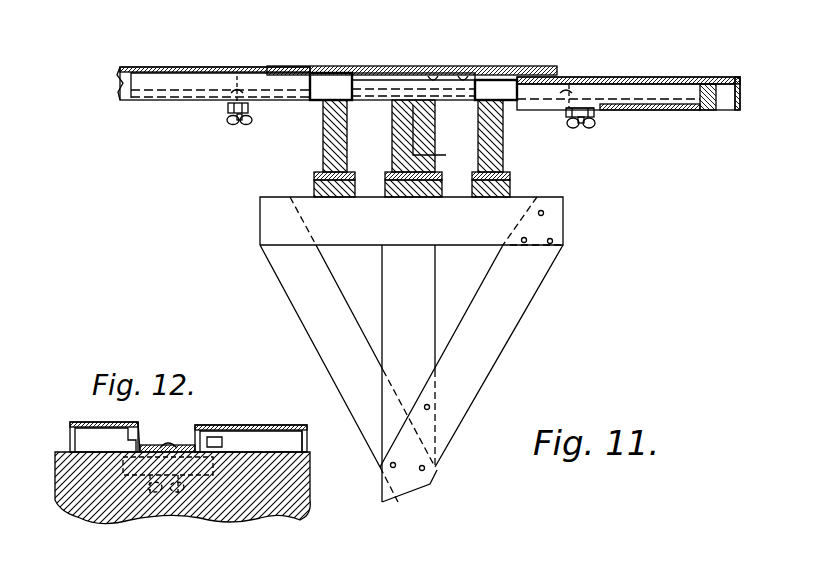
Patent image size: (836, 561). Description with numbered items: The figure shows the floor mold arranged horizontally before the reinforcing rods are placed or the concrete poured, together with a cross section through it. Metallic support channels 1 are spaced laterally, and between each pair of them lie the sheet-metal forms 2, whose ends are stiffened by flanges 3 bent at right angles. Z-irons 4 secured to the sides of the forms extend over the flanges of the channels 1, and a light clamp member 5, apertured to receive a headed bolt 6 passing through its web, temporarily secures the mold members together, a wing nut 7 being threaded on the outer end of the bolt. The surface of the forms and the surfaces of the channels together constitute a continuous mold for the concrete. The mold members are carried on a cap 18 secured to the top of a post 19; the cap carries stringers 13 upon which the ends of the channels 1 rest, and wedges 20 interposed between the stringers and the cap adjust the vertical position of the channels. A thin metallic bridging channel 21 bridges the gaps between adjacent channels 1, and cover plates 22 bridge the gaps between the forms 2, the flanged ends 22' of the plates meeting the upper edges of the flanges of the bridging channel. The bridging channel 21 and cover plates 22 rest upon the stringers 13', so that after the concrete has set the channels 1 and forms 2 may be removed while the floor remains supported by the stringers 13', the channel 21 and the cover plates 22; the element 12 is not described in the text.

In FIG. 11, the channel 1 is at (722, 91).
In FIG. 12, the channel 1 is at (228, 450).
In FIG. 11, the form 2 is at (667, 78).
In FIG. 12, the form 2 is at (307, 442).
In FIG. 11, the flange 3 is at (369, 74).
In FIG. 12, the flange 3 is at (70, 438).
In FIG. 11, the Z-iron 4 is at (691, 112).
In FIG. 12, the Z-iron 4 is at (220, 443).
In FIG. 11, the member 5 is at (593, 114).
In FIG. 12, the member 5 is at (137, 476).
In FIG. 11, the headed bolt 6 is at (568, 110).
In FIG. 11, the wing nut 7 is at (584, 122).
In FIG. 12, the wing nut 7 is at (183, 494).
In FIG. 11, the post cap / rod 12 is at (413, 86).
In FIG. 11, the stringer 13 is at (417, 136).
In FIG. 11, the stringer 13' is at (394, 136).
In FIG. 12, the stringer 13' is at (182, 506).
In FIG. 11, the cap 18 is at (545, 225).
In FIG. 11, the post 19 is at (417, 288).
In FIG. 11, the wedge 20 is at (383, 184).
In FIG. 11, the bridging channel 21 is at (375, 88).
In FIG. 12, the bridging channel 21 is at (148, 446).
In FIG. 11, the cover plate 22 is at (494, 61).
In FIG. 12, the cover plate 22 is at (209, 425).
In FIG. 11, the flanged end 22' is at (466, 48).
In FIG. 12, the flanged end 22' is at (192, 424).